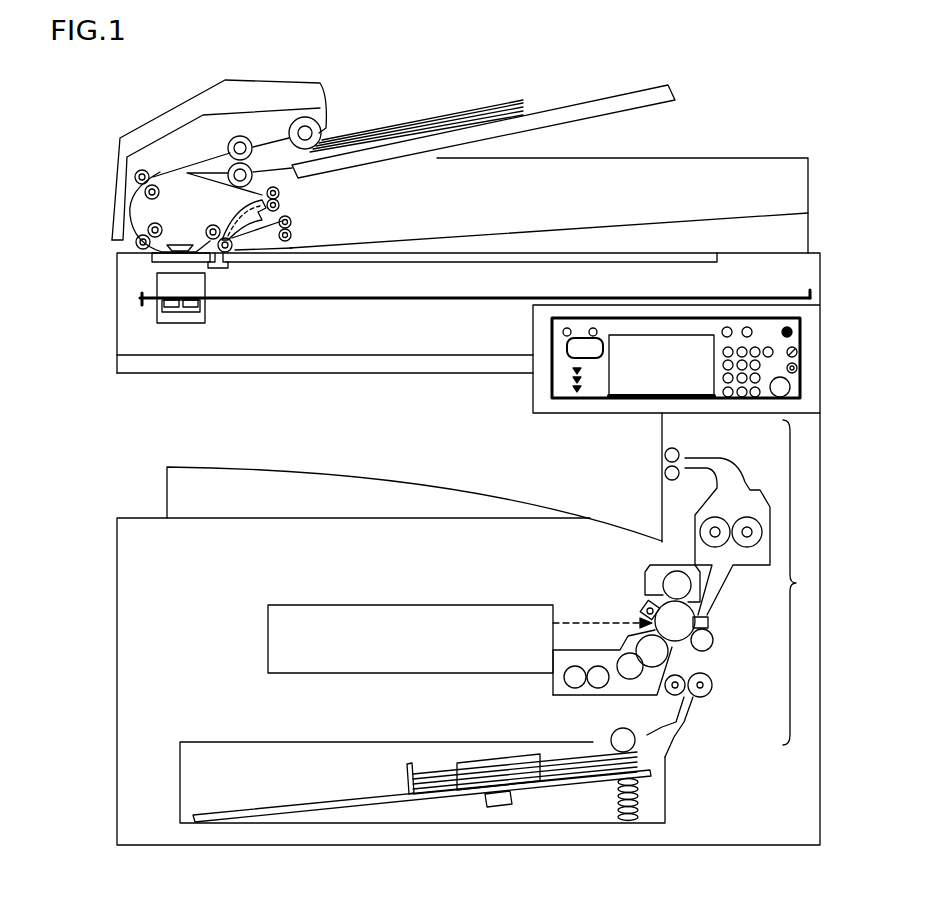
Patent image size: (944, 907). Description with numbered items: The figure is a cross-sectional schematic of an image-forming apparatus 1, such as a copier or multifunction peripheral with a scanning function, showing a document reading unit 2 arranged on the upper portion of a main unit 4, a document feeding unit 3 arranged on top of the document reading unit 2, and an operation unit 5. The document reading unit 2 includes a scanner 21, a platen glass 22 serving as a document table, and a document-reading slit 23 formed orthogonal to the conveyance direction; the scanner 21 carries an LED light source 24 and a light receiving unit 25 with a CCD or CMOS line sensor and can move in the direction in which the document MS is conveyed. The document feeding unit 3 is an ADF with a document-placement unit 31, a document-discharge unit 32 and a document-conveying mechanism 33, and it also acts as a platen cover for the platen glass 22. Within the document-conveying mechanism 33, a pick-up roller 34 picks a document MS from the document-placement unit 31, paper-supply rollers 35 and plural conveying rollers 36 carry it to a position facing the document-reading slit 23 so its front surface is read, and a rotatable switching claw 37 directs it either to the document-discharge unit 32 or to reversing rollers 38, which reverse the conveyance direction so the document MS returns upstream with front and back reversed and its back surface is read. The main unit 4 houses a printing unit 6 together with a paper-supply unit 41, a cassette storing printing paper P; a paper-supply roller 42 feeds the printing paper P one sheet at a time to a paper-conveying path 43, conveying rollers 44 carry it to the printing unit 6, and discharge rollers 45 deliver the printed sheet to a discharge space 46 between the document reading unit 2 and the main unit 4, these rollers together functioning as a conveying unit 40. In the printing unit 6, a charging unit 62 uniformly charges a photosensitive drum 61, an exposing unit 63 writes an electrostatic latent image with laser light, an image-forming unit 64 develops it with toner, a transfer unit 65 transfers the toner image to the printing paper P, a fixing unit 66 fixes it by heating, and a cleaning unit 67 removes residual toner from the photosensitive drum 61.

The image-forming apparatus 1 is at (744, 50).
The document reading unit 2 is at (90, 304).
The document feeding unit 3 is at (90, 175).
The main unit 4 is at (90, 592).
The operation unit 5 is at (814, 338).
The printing unit 6 is at (548, 580).
The scanner 21 is at (195, 323).
The platen glass 22 is at (438, 258).
The document-reading slit 23 is at (160, 257).
The light source 24 is at (167, 302).
The light receiving unit 25 is at (200, 295).
The document-placement unit 31 is at (642, 87).
The document-discharge unit 32 is at (553, 227).
The document-conveying mechanism 33 is at (255, 78).
The pick-up roller 34 is at (318, 125).
The paper-supply rollers 35 is at (235, 140).
The conveying rollers 36 is at (135, 172).
The switching claw 37 is at (235, 208).
The reversing rollers 38 is at (280, 192).
The conveying unit 40 is at (801, 582).
The paper-supply unit 41 is at (667, 780).
The paper-supply roller 42 is at (625, 740).
The paper-conveying path 43 is at (695, 710).
The conveying rollers 44 is at (712, 685).
The discharge rollers 45 is at (677, 450).
The discharge space 46 is at (388, 480).
The photosensitive drum 61 is at (683, 617).
The charging unit 62 is at (645, 605).
The exposing unit 63 is at (310, 648).
The image-forming unit 64 is at (558, 683).
The transfer unit 65 is at (713, 640).
The fixing unit 66 is at (695, 525).
The cleaning unit 67 is at (650, 572).
The document MS is at (435, 117).
The printing paper P is at (447, 770).